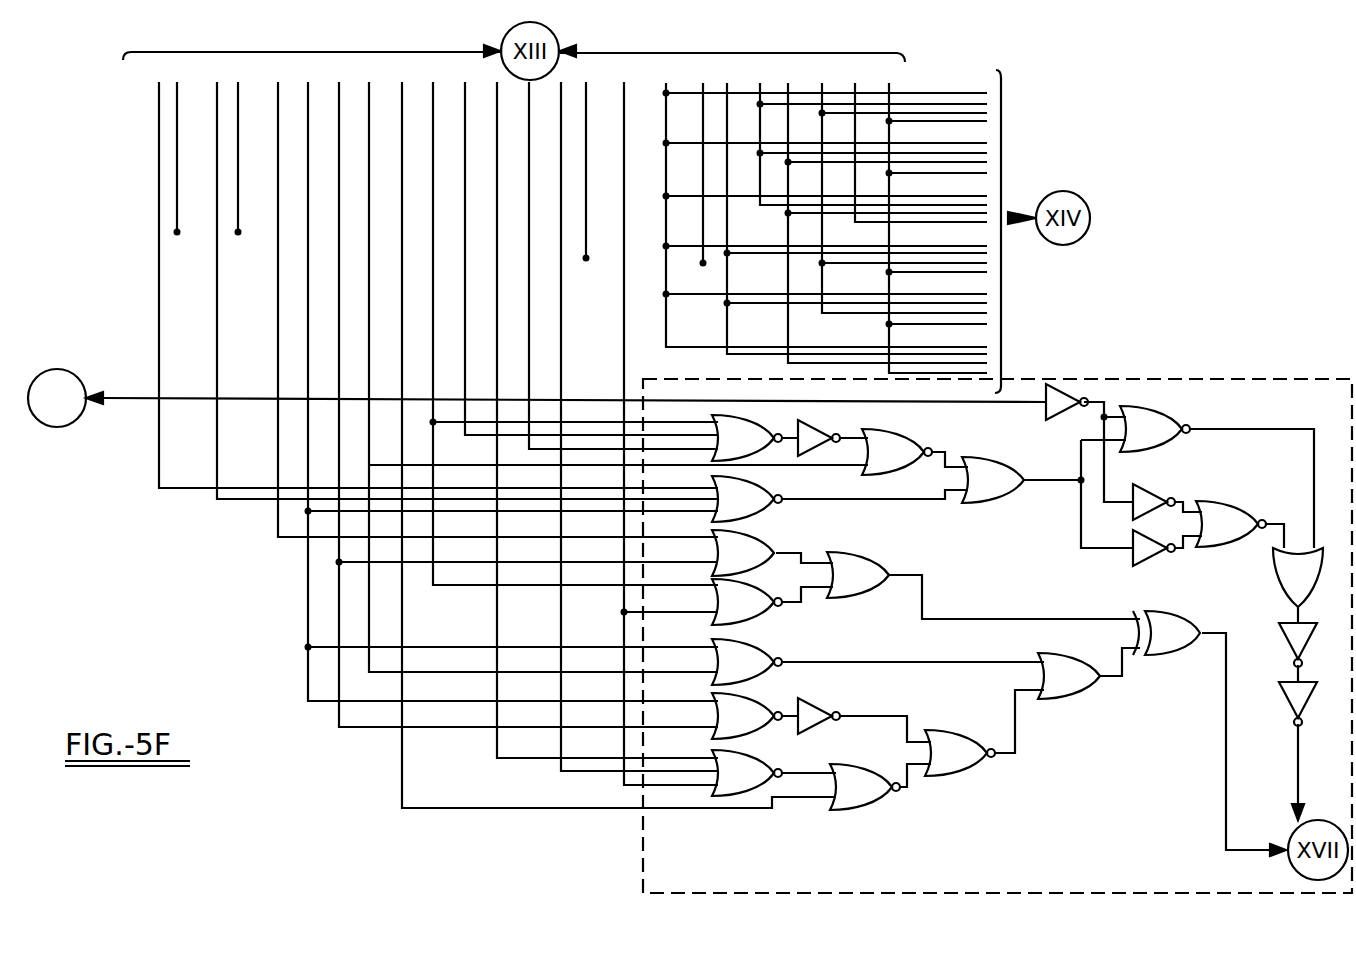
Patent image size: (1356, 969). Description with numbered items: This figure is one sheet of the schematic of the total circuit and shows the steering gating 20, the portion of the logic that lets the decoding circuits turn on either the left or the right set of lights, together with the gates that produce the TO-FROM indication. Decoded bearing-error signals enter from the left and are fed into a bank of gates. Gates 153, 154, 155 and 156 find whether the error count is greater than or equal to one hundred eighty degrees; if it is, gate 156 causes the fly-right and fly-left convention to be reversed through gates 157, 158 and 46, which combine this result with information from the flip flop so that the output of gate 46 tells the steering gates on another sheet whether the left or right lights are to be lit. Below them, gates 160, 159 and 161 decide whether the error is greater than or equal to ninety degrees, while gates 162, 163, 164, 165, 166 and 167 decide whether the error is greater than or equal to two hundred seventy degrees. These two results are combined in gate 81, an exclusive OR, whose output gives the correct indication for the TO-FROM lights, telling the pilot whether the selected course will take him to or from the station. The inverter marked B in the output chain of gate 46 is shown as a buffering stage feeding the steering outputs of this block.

The steering gating 20 is at (1202, 380).
The gate 46 is at (1298, 577).
The exclusive OR gate 81 is at (1166, 633).
The gate 153 is at (747, 438).
The gate 154 is at (747, 499).
The gate 155 is at (897, 452).
The gate 156 is at (993, 480).
The gate 157 is at (1155, 429).
The gate 158 is at (1231, 524).
The gate 159 is at (743, 553).
The gate 160 is at (747, 602).
The gate 161 is at (858, 575).
The gate 162 is at (747, 662).
The gate 163 is at (747, 716).
The gate 164 is at (747, 773).
The gate 165 is at (865, 787).
The gate 166 is at (960, 753).
The gate 167 is at (1069, 676).
The inverter B is at (1298, 704).